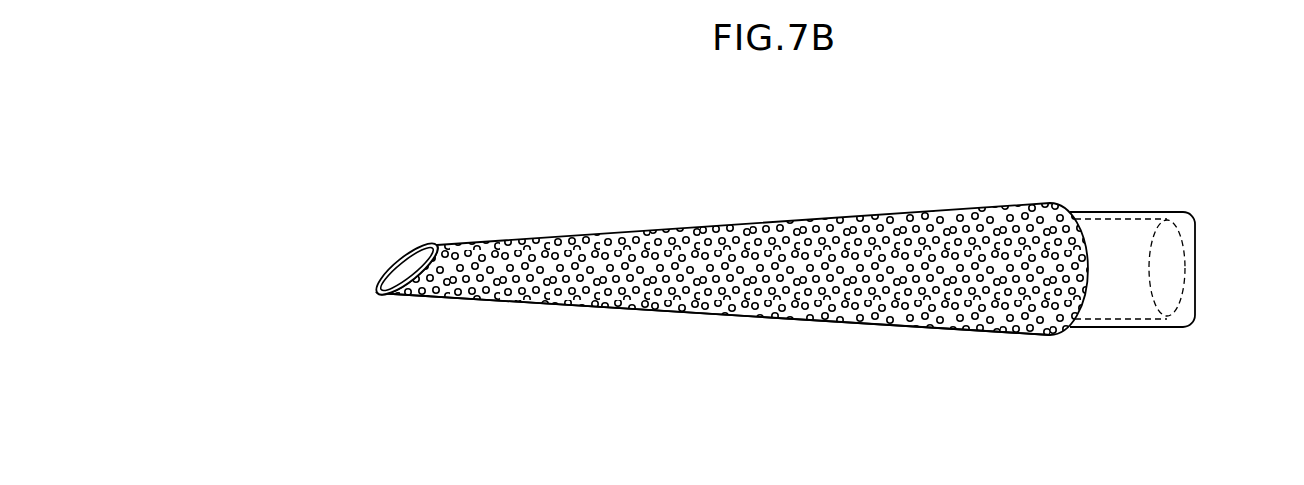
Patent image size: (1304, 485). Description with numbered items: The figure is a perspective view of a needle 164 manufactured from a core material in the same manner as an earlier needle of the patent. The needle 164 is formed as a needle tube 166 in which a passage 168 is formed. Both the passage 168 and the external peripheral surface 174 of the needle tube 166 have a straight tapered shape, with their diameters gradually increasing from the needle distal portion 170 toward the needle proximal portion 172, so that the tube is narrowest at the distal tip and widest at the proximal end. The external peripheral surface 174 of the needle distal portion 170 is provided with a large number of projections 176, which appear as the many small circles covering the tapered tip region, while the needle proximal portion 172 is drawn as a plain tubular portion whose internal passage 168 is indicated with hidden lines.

The needle 164 is at (1033, 114).
The needle tube 166 is at (1118, 302).
The passage 168 is at (1135, 247).
The needle distal portion 170 is at (729, 260).
The needle proximal portion 172 is at (1173, 254).
The external peripheral surface 174 is at (703, 225).
The projections 176 is at (848, 300).